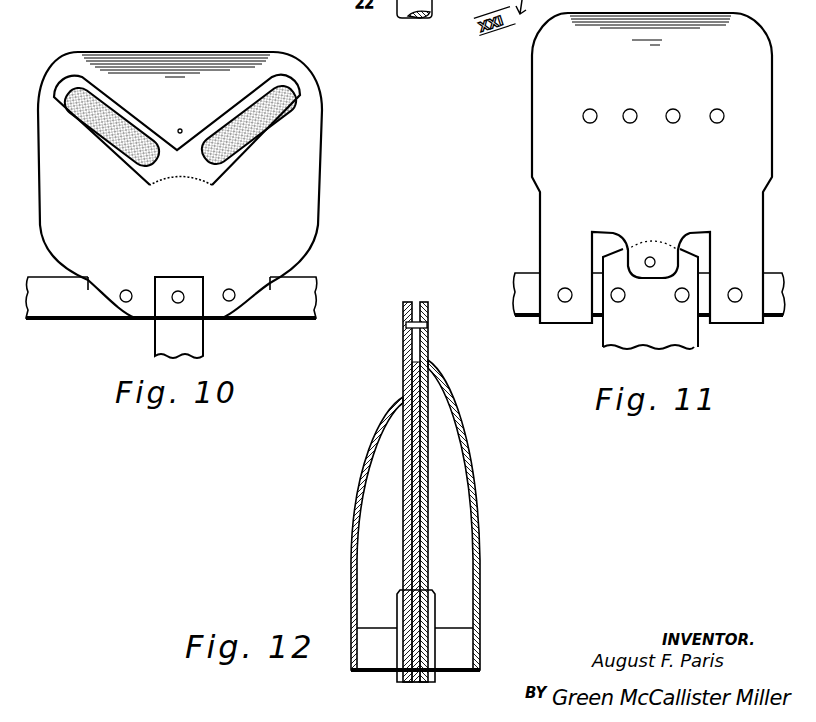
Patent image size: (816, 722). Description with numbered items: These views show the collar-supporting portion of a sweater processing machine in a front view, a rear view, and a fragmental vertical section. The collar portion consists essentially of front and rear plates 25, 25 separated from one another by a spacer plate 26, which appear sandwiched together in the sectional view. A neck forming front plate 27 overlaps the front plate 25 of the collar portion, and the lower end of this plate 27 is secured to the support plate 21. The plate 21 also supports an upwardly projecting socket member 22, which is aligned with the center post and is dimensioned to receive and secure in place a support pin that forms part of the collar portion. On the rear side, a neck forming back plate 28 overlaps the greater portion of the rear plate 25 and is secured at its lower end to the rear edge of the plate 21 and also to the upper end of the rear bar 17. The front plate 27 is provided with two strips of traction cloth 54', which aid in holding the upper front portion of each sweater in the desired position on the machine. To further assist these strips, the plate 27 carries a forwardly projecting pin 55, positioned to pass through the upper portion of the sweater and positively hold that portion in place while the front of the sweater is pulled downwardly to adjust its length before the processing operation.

In FIG. 11, the rear bar 17 is at (690, 335).
In FIG. 10, the plate 21 is at (305, 294).
In FIG. 11, the plate 21 is at (525, 280).
In FIG. 12, the plate 21 is at (380, 660).
In FIG. 10, the socket member 22 is at (155, 341).
In FIG. 12, the front and rear plates 25 is at (403, 352).
In FIG. 12, the spacer plate 26 is at (412, 386).
In FIG. 10, the neck forming front plate 27 is at (298, 231).
In FIG. 12, the neck forming front plate 27 is at (360, 472).
In FIG. 11, the neck forming back plate 28 is at (532, 160).
In FIG. 12, the neck forming back plate 28 is at (477, 478).
In FIG. 10, the strips of traction cloth 54' is at (203, 130).
In FIG. 10, the forwardly projecting pin 55 is at (180, 128).